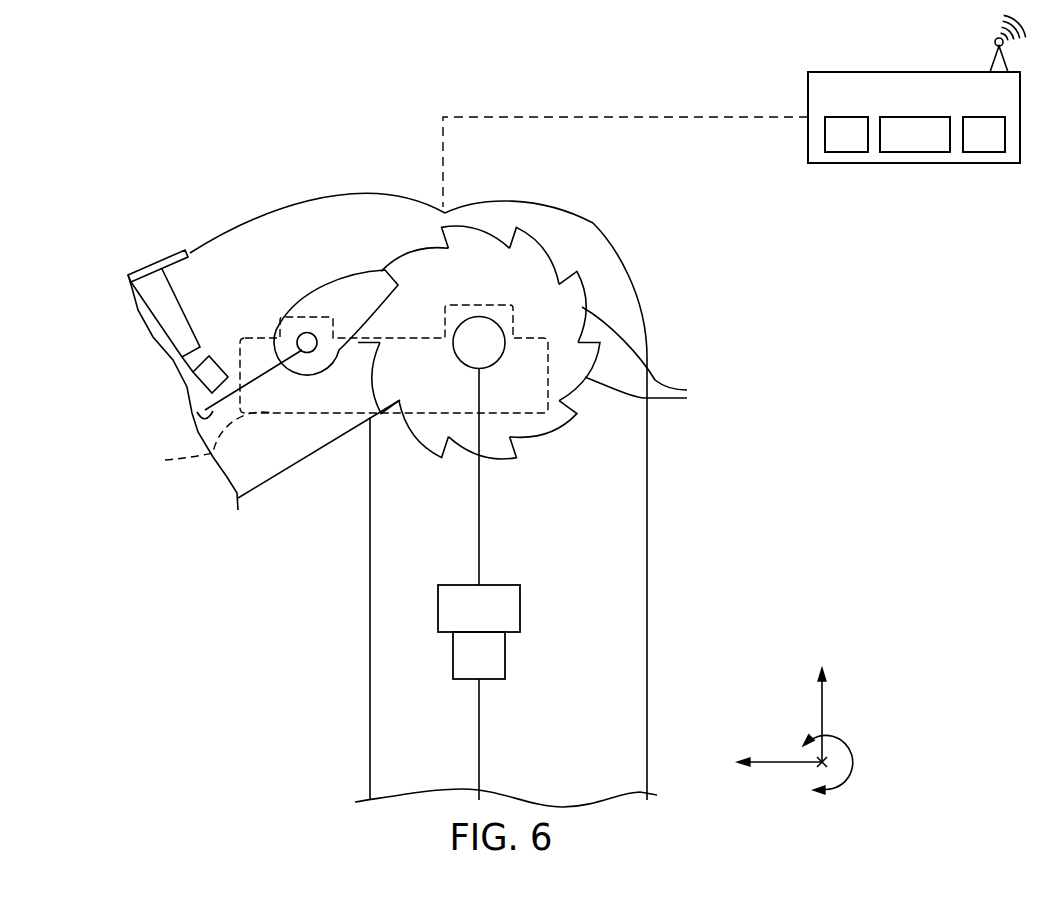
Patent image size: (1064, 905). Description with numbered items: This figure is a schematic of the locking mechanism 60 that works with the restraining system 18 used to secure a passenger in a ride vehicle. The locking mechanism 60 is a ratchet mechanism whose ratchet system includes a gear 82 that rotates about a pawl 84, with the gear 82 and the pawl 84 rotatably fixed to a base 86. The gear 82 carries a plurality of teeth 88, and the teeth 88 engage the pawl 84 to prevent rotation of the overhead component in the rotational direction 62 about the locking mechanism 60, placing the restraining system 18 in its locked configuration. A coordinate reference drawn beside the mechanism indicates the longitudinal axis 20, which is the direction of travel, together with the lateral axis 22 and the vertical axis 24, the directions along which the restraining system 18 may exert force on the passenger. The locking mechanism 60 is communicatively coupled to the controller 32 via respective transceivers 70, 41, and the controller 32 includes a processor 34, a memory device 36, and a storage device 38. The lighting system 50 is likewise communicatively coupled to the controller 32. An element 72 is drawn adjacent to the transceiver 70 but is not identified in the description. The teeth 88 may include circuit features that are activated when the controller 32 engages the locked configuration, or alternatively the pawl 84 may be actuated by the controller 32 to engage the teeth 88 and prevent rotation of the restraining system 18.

The restraining system 18 is at (305, 140).
The longitudinal axis 20 is at (783, 765).
The lateral axis 22 is at (833, 790).
The vertical axis 24 is at (824, 700).
The controller 32 is at (915, 72).
The processor 34 is at (847, 152).
The memory device 36 is at (917, 152).
The storage device 38 is at (983, 152).
The transceiver 41 is at (1005, 70).
The lighting system 50 is at (153, 268).
The locking mechanism 60 is at (681, 233).
The rotational direction 62 is at (851, 756).
The transceiver 70 is at (198, 432).
The actuator piston 72 is at (217, 363).
The gear 82 is at (541, 246).
The pawl 84 is at (333, 282).
The base 86 is at (202, 443).
The teeth 88 is at (650, 355).